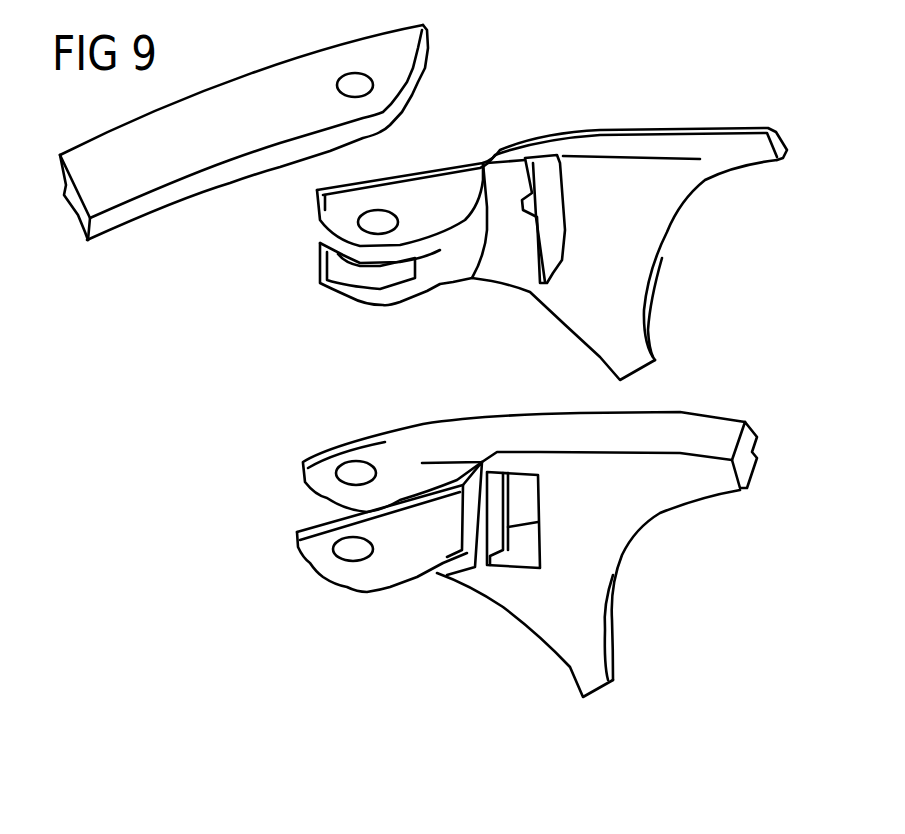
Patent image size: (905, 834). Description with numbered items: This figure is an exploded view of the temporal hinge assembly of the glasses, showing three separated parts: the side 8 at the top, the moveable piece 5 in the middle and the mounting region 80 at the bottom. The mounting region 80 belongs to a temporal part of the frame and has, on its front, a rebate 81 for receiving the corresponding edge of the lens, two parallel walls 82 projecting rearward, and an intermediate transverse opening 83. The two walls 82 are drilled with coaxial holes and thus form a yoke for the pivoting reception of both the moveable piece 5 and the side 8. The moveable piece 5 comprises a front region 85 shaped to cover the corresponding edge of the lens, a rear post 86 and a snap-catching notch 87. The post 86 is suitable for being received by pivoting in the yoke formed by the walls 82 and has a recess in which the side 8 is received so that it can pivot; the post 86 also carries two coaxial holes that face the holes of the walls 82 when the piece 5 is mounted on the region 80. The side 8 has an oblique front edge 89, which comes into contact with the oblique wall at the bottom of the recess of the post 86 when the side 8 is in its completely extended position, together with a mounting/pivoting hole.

The side 8 is at (263, 87).
The oblique front edge 89 is at (418, 82).
The moveable piece 5 is at (683, 120).
The front region 85 is at (633, 243).
The rear post 86 is at (445, 257).
The snap-catching notch 87 is at (540, 274).
The mounting region 80 is at (710, 412).
The rebate 81 is at (757, 453).
The parallel walls 82 is at (330, 499).
The intermediate transverse opening 83 is at (533, 517).